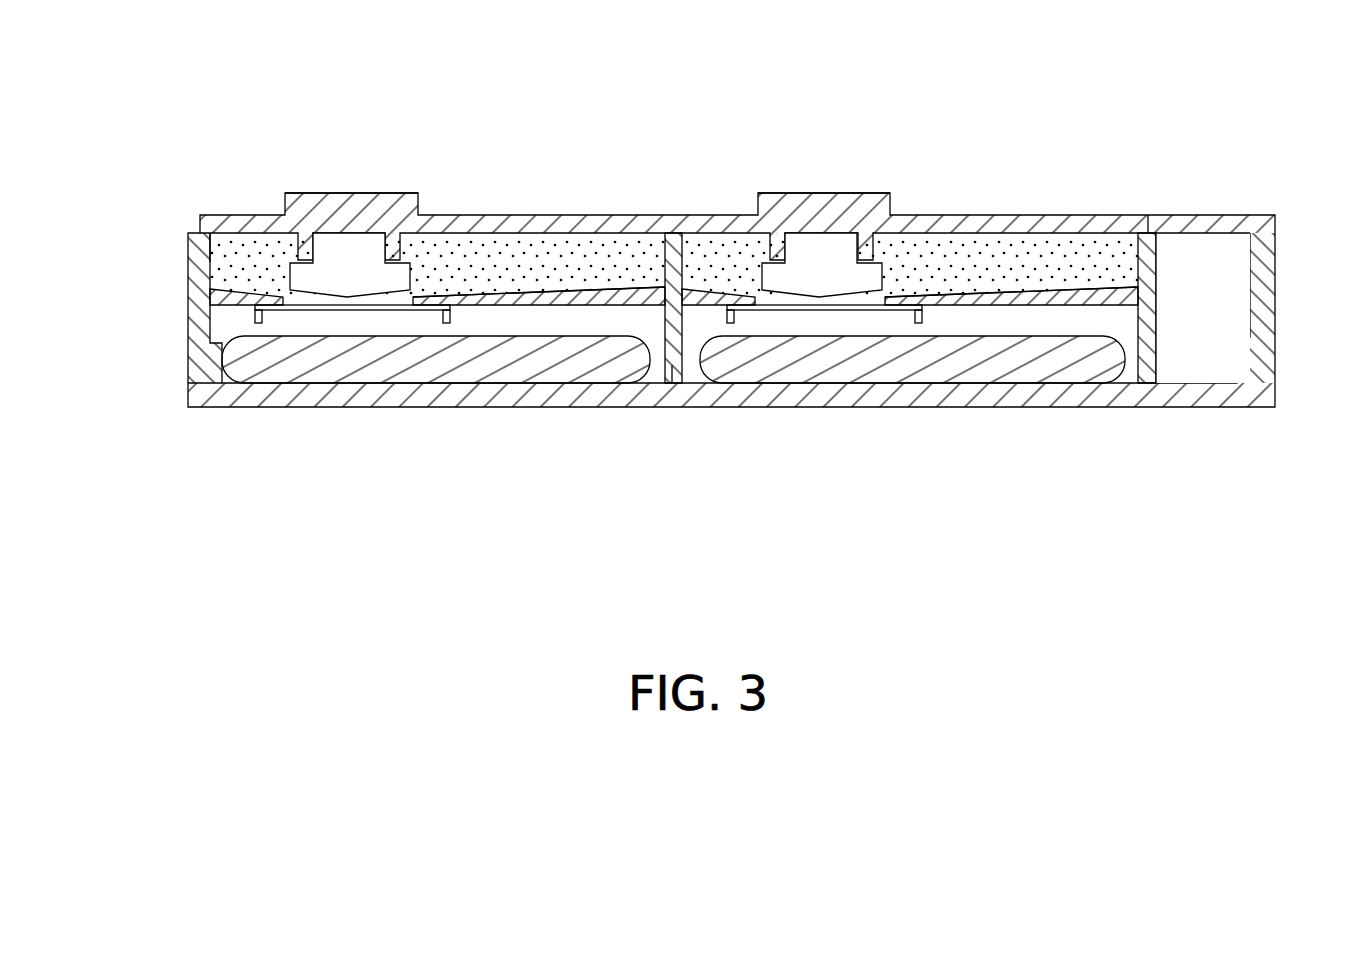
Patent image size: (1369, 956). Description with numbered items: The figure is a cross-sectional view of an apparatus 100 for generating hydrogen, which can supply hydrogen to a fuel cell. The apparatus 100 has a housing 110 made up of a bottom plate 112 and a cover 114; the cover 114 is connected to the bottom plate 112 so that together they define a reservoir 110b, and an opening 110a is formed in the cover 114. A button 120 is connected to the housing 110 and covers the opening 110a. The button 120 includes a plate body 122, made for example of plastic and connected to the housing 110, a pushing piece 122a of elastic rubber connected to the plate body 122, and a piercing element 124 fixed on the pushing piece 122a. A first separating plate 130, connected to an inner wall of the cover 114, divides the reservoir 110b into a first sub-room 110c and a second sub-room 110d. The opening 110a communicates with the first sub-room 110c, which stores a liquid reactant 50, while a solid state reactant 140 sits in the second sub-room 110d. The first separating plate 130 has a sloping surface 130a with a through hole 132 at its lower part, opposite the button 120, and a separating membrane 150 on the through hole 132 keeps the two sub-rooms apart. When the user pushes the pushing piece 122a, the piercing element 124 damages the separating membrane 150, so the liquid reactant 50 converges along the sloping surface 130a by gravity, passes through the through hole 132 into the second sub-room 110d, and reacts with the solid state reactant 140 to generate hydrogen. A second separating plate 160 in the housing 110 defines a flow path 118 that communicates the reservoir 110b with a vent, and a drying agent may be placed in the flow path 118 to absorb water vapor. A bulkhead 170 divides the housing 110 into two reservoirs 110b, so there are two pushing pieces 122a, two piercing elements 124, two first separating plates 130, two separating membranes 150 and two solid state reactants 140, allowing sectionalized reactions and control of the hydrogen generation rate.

The apparatus for generating hydrogen 100 is at (700, 309).
The housing 110 is at (687, 341).
The bottom plate 112 is at (220, 397).
The cover 114 is at (197, 320).
The opening 110a is at (212, 242).
The reservoir 110b is at (893, 411).
The first sub-room 110c is at (665, 261).
The second sub-room 110d is at (665, 329).
The flow path 118 is at (1246, 262).
The button 120 is at (737, 254).
The plate body 122 is at (998, 222).
The pushing piece 122a is at (798, 205).
The piercing element 124 is at (327, 270).
The first separating plate 130 is at (547, 297).
The sloping surface 130a is at (505, 289).
The through hole 132 is at (404, 309).
The solid state reactant 140 is at (480, 370).
The separating membrane 150 is at (362, 312).
The second separating plate 160 is at (1157, 320).
The bulkhead 170 is at (681, 383).
The liquid reactant 50 is at (455, 256).